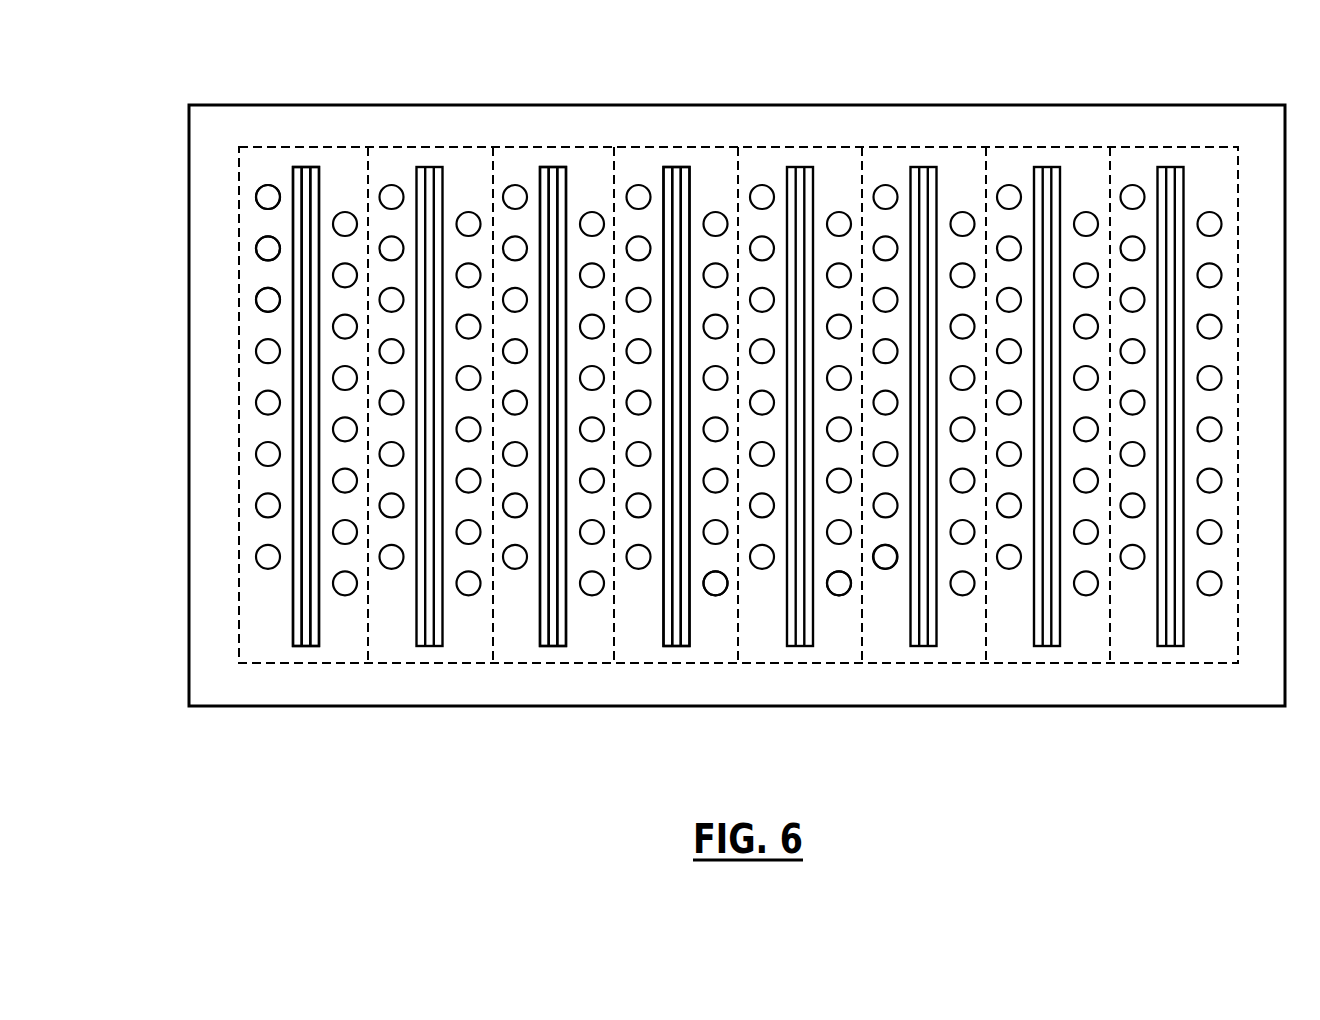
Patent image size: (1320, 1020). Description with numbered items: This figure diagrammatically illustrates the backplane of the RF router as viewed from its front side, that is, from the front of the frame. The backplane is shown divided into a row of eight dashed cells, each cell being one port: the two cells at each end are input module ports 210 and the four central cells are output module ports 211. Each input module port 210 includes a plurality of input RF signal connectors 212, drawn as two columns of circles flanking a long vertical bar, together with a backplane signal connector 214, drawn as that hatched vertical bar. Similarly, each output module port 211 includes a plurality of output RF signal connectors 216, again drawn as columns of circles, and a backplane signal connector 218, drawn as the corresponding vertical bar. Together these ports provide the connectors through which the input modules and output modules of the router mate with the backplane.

The input module port 210 is at (303, 147).
The output module port 211 is at (560, 147).
The input RF signal connector 212 is at (263, 196).
The backplane signal connector 214 is at (313, 645).
The output RF signal connector 216 is at (730, 584).
The backplane signal connector 218 is at (675, 632).